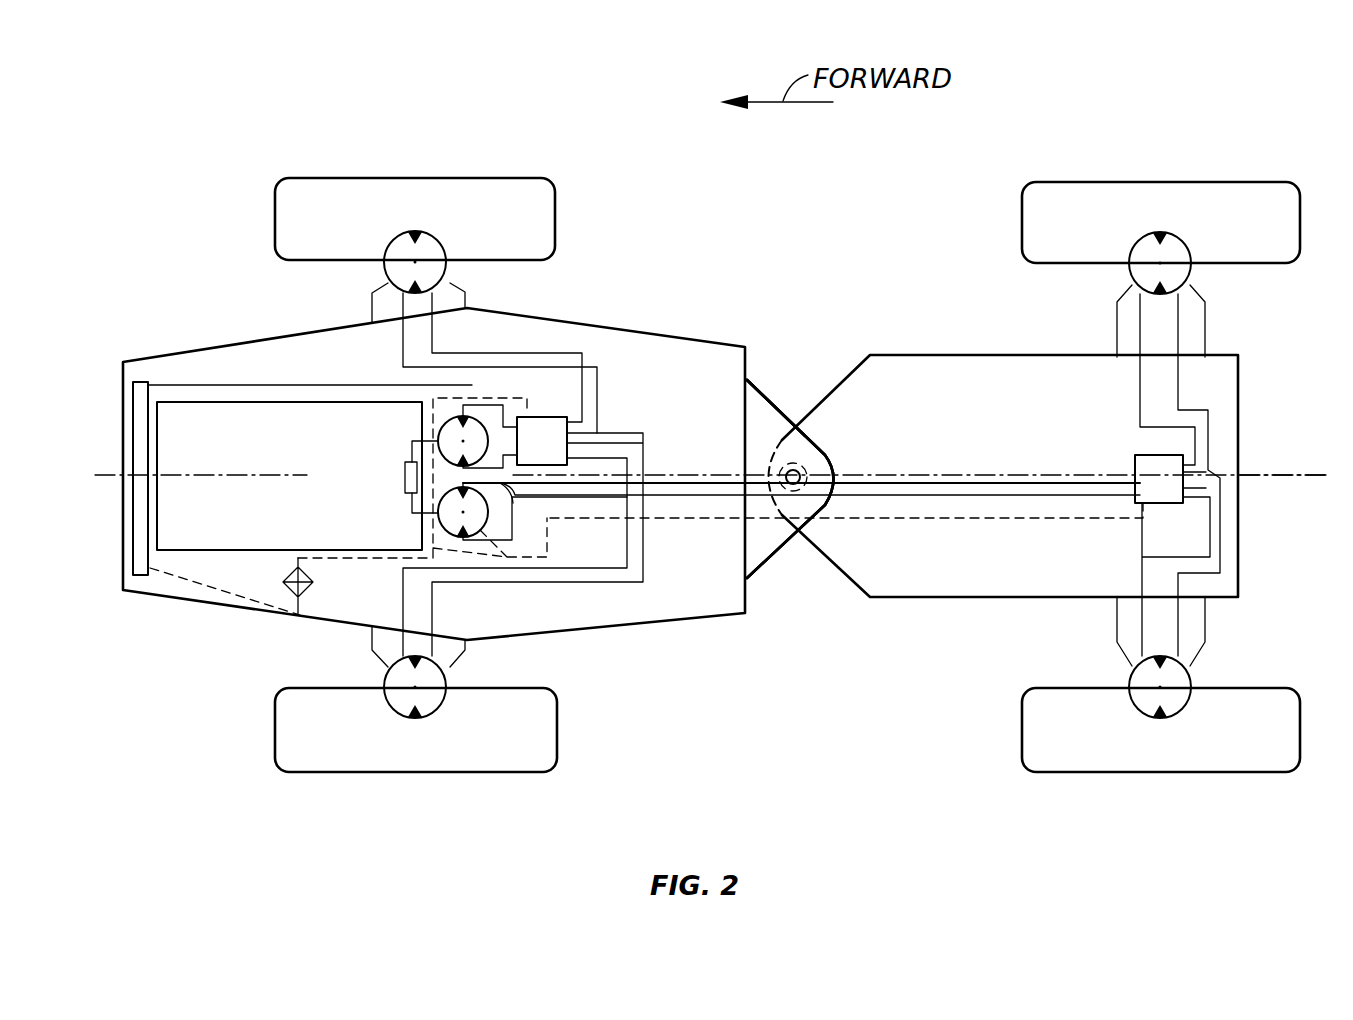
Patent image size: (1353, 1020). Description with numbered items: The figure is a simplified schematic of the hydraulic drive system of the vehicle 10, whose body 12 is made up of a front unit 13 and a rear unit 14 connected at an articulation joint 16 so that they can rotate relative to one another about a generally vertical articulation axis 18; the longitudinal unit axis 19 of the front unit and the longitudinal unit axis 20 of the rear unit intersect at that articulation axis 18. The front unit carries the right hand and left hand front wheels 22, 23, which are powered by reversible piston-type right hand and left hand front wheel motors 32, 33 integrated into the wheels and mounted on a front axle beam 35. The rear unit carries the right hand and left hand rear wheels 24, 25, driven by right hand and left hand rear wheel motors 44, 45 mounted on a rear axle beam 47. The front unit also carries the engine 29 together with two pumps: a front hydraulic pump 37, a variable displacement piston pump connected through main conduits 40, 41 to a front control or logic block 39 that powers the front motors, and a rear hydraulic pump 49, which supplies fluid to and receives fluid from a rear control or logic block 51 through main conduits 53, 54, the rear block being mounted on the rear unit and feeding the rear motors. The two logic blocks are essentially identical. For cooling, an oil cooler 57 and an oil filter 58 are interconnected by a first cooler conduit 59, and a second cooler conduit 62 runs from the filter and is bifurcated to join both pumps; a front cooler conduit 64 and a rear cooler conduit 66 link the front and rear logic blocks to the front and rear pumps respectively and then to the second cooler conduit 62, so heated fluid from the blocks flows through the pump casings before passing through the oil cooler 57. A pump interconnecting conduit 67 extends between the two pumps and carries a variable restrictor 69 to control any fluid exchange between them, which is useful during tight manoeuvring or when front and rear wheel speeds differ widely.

The vehicle 10 is at (795, 240).
The body 12 is at (790, 479).
The front unit 13 is at (620, 342).
The rear unit 14 is at (995, 380).
The articulation joint 16 is at (810, 428).
The articulation axis 18 is at (800, 470).
The longitudinal unit axis of front unit 19 is at (108, 470).
The longitudinal unit axis of rear unit 20 is at (1278, 477).
The right hand front wheel 22 is at (295, 213).
The left hand front wheel 23 is at (400, 775).
The right hand rear wheel 24 is at (1040, 216).
The left hand rear wheel 25 is at (1160, 775).
The engine 29 is at (215, 441).
The right hand front wheel motor 32 is at (395, 268).
The left hand front wheel motor 33 is at (390, 678).
The front axle beam 35 is at (455, 295).
The front hydraulic pump 37 is at (438, 435).
The front control or logic block 39 is at (560, 413).
The main conduit 40 is at (507, 505).
The main conduit 41 is at (483, 403).
The right hand rear wheel motor 44 is at (1140, 268).
The left hand rear wheel motor 45 is at (1190, 682).
The rear axle beam 47 is at (1200, 315).
The rear hydraulic pump 49 is at (438, 520).
The rear control or logic block 51 is at (1140, 460).
The main conduit 53 is at (995, 478).
The main conduit 54 is at (947, 497).
The oil cooler 57 is at (140, 524).
The oil filter 58 is at (287, 580).
The first cooler conduit 59 is at (205, 592).
The second cooler conduit 62 is at (375, 560).
The front cooler conduit 64 is at (580, 408).
The rear cooler conduit 66 is at (855, 520).
The pump interconnecting conduit 67 is at (405, 458).
The variable restrictor 69 is at (405, 480).